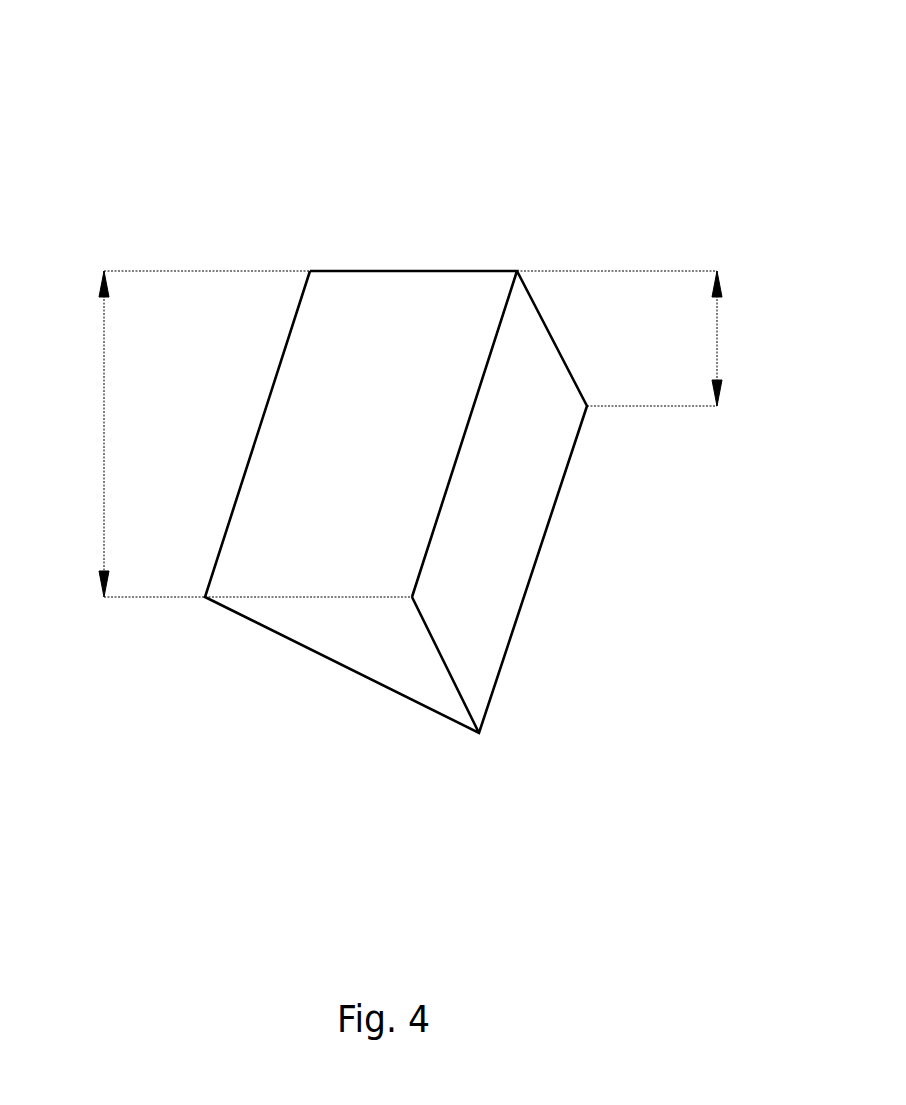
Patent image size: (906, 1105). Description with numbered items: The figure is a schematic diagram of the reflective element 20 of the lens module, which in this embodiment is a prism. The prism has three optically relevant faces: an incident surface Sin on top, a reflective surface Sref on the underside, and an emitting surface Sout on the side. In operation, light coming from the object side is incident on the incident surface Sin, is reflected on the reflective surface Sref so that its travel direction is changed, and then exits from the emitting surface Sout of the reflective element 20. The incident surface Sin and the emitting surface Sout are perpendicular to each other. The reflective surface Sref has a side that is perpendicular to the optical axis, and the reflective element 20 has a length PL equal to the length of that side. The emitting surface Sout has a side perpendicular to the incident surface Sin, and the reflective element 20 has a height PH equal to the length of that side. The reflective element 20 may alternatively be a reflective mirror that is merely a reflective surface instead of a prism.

The reflective element 20 is at (88, 66).
The incident surface Sin is at (362, 312).
The emitting surface Sout is at (522, 510).
The reflective surface Sref is at (275, 635).
The length of the reflective element PL is at (180, 434).
The height of the reflective element PH is at (648, 338).